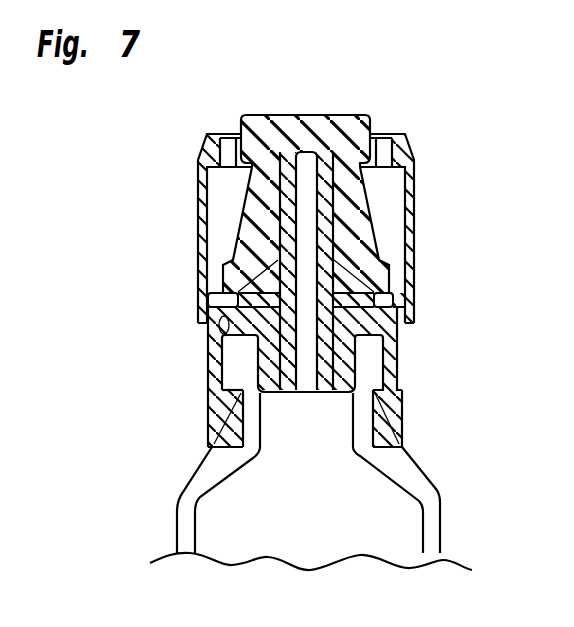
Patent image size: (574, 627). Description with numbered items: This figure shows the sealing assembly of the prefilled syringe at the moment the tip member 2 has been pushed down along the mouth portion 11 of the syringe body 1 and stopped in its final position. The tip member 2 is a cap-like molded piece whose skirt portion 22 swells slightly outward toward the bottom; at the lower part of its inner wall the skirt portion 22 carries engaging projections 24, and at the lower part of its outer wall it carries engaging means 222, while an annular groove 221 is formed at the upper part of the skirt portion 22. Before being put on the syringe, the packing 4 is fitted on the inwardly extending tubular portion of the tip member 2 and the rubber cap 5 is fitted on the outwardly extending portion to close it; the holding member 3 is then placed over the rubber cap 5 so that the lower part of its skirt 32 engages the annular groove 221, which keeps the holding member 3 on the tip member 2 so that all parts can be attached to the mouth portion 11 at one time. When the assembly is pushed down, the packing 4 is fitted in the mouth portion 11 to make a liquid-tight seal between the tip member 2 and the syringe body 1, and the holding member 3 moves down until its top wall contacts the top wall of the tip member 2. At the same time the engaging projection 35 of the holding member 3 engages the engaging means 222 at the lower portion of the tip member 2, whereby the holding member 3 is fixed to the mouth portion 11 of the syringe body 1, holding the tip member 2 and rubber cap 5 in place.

The syringe body 1 is at (441, 522).
The tip member 2 is at (342, 235).
The holding member 3 is at (414, 190).
The packing 4 is at (380, 323).
The rubber cap 5 is at (366, 118).
The mouth portion 11 is at (227, 417).
The skirt portion 22 is at (400, 365).
The annular groove 221 is at (400, 309).
The engaging means 222 is at (205, 437).
The engaging projections 24 is at (404, 433).
The skirt 32 is at (198, 228).
The engaging projection 35 is at (213, 333).